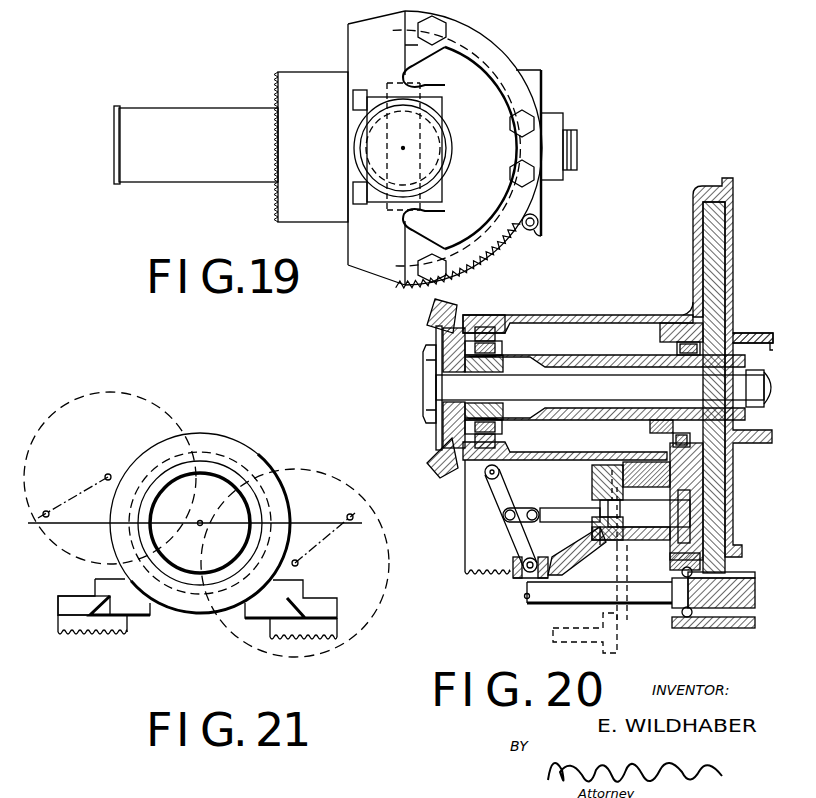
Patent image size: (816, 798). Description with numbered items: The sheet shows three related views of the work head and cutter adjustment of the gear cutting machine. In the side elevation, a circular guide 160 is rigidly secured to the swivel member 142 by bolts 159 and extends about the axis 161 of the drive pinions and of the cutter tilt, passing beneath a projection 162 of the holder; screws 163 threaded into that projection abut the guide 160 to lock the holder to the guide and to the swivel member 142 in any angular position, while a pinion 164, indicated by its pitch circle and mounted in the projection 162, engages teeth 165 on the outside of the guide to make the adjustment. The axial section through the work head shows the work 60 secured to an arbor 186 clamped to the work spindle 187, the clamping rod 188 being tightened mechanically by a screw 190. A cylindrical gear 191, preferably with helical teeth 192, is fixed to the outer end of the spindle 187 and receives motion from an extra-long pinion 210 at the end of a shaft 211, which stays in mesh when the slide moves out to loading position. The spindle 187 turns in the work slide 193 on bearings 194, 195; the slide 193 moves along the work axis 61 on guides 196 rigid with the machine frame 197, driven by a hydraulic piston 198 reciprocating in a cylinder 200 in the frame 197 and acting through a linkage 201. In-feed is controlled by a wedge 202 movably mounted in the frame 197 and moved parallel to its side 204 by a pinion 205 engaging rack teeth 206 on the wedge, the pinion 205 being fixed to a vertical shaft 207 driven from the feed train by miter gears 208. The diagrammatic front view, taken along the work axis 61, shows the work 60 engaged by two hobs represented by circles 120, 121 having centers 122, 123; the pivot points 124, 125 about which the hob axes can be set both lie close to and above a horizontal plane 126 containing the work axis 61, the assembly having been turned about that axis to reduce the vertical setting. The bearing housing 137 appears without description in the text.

In FIG. 21, the work 60 is at (204, 441).
In FIG. 20, the work 60 is at (457, 303).
In FIG. 21, the work axis 61 is at (198, 521).
In FIG. 21, the circle 120 is at (316, 470).
In FIG. 21, the circle 121 is at (84, 392).
In FIG. 21, the center 122 is at (323, 548).
In FIG. 21, the center 123 is at (75, 486).
In FIG. 21, the pivot point 124 is at (347, 516).
In FIG. 21, the pivot point 125 is at (47, 511).
In FIG. 21, the horizontal plane 126 is at (73, 523).
In FIG. 19, the bearing 137 is at (463, 130).
In FIG. 19, the swivel member 142 is at (320, 73).
In FIG. 19, the bolts 159 is at (438, 22).
In FIG. 19, the circular guide 160 is at (478, 52).
In FIG. 19, the axis 161 is at (403, 148).
In FIG. 19, the projection 162 is at (530, 143).
In FIG. 19, the screws 163 is at (524, 112).
In FIG. 19, the pinion 164 is at (537, 215).
In FIG. 19, the teeth 165 is at (480, 203).
In FIG. 20, the arbor 186 is at (455, 340).
In FIG. 20, the work spindle 187 is at (605, 378).
In FIG. 20, the clamping rod 188 is at (615, 388).
In FIG. 20, the screw 190 is at (755, 352).
In FIG. 20, the cylindrical gear 191 is at (710, 219).
In FIG. 20, the helical teeth 192 is at (700, 190).
In FIG. 21, the work slide 193 is at (125, 603).
In FIG. 20, the work slide 193 is at (571, 318).
In FIG. 20, the bearing 194 is at (500, 326).
In FIG. 20, the bearing 195 is at (685, 312).
In FIG. 21, the guides 196 is at (80, 600).
In FIG. 21, the machine frame 197 is at (97, 627).
In FIG. 20, the machine frame 197 is at (590, 540).
In FIG. 20, the hydraulic piston 198 is at (580, 504).
In FIG. 20, the cylinder 200 is at (660, 527).
In FIG. 20, the linkage 201 is at (495, 497).
In FIG. 20, the wedge 202 is at (697, 462).
In FIG. 20, the side 204 is at (627, 463).
In FIG. 20, the pinion 205 is at (612, 478).
In FIG. 20, the rack teeth 206 is at (680, 478).
In FIG. 20, the vertical shaft 207 is at (665, 567).
In FIG. 20, the miter gears 208 is at (607, 599).
In FIG. 20, the pinion 210 is at (720, 608).
In FIG. 20, the shaft 211 is at (525, 597).